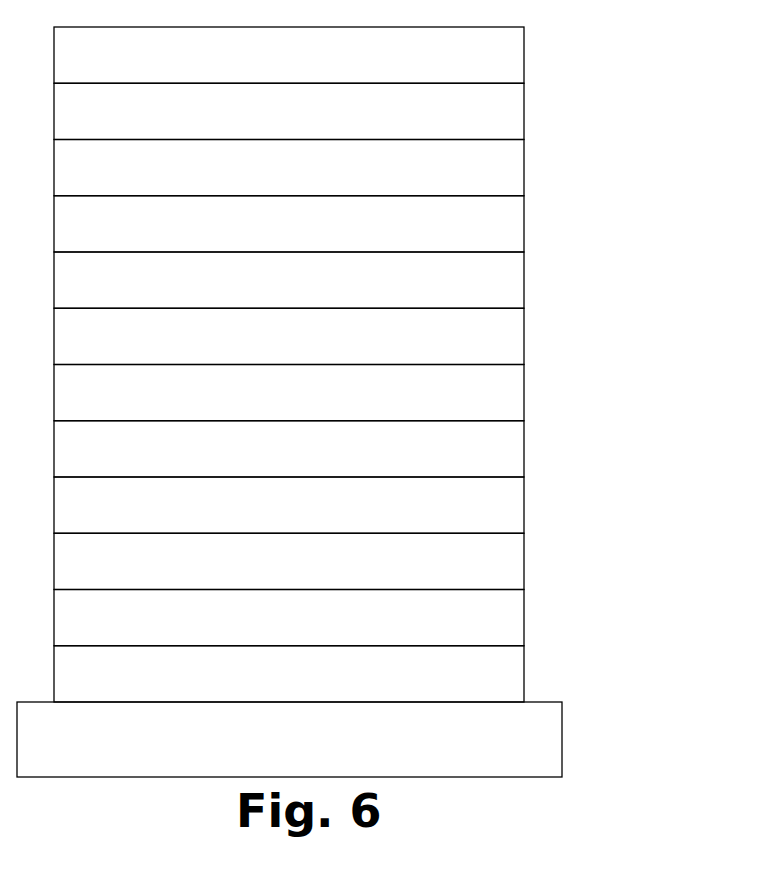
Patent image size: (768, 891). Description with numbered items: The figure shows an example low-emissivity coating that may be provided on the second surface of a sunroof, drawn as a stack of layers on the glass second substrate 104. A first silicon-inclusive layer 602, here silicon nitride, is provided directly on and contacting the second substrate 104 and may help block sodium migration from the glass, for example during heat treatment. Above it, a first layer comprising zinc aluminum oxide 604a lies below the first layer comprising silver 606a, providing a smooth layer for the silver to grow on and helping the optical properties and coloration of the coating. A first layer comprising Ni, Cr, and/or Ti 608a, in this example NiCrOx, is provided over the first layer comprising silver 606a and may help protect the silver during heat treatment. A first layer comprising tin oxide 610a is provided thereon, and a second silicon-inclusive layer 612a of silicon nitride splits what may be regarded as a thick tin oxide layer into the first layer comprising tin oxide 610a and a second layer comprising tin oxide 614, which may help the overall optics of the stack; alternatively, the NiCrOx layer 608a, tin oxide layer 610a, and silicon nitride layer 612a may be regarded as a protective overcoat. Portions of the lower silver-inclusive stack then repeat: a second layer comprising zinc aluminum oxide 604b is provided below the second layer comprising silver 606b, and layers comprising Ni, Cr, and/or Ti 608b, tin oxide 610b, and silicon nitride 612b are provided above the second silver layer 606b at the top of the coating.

The layer comprising silicon nitride 612b is at (363, 49).
The layer comprising tin oxide 610b is at (363, 105).
The layer comprising Ni, Cr, and/or Ti 608b is at (363, 161).
The second layer comprising silver 606b is at (363, 217).
The second layer comprising zinc aluminum oxide 604b is at (363, 274).
The second layer comprising tin oxide 614 is at (356, 330).
The second silicon-inclusive layer 612a is at (363, 386).
The first layer comprising tin oxide 610a is at (363, 442).
The first layer comprising Ni, Cr, and/or Ti 608a is at (363, 499).
The first layer comprising silver 606a is at (363, 555).
The first layer comprising zinc aluminum oxide 604a is at (363, 611).
The first silicon-inclusive layer 602 is at (356, 667).
The second substrate 104 is at (562, 740).